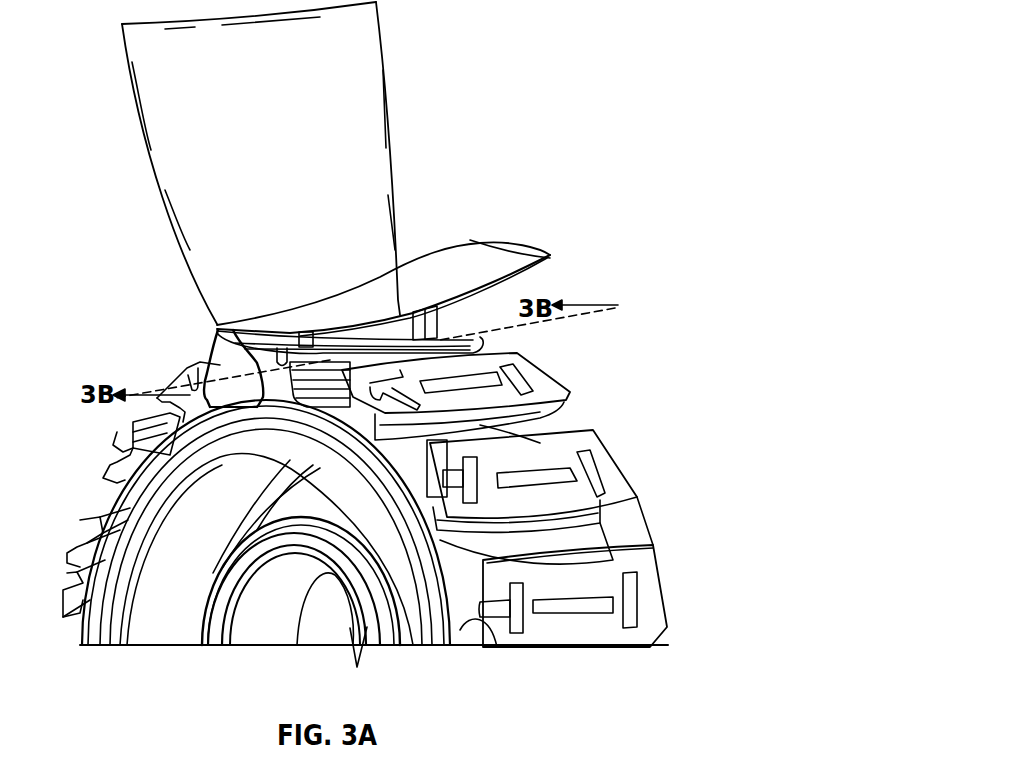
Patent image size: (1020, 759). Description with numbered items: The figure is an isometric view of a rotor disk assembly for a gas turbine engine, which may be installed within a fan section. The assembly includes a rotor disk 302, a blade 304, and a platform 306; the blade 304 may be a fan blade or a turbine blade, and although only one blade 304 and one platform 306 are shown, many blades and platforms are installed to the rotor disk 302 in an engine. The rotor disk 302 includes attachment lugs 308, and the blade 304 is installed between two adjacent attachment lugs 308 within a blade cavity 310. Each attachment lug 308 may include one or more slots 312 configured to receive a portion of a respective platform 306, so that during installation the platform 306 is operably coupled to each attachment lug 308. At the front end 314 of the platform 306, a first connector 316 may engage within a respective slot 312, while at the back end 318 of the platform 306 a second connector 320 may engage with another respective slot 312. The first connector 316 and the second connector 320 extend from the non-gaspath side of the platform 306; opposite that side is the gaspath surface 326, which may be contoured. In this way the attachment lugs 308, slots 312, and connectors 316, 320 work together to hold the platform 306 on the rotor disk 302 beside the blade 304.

The rotor disk 302 is at (117, 513).
The blade 304 is at (387, 77).
The platform 306 is at (527, 253).
The attachment lug 308 is at (547, 373).
The blade cavity 310 is at (112, 438).
The slot 312 is at (593, 470).
The front end 314 is at (229, 314).
The first connector 316 is at (313, 333).
The back end 318 is at (478, 235).
The second connector 320 is at (437, 307).
The gaspath surface 326 is at (395, 305).